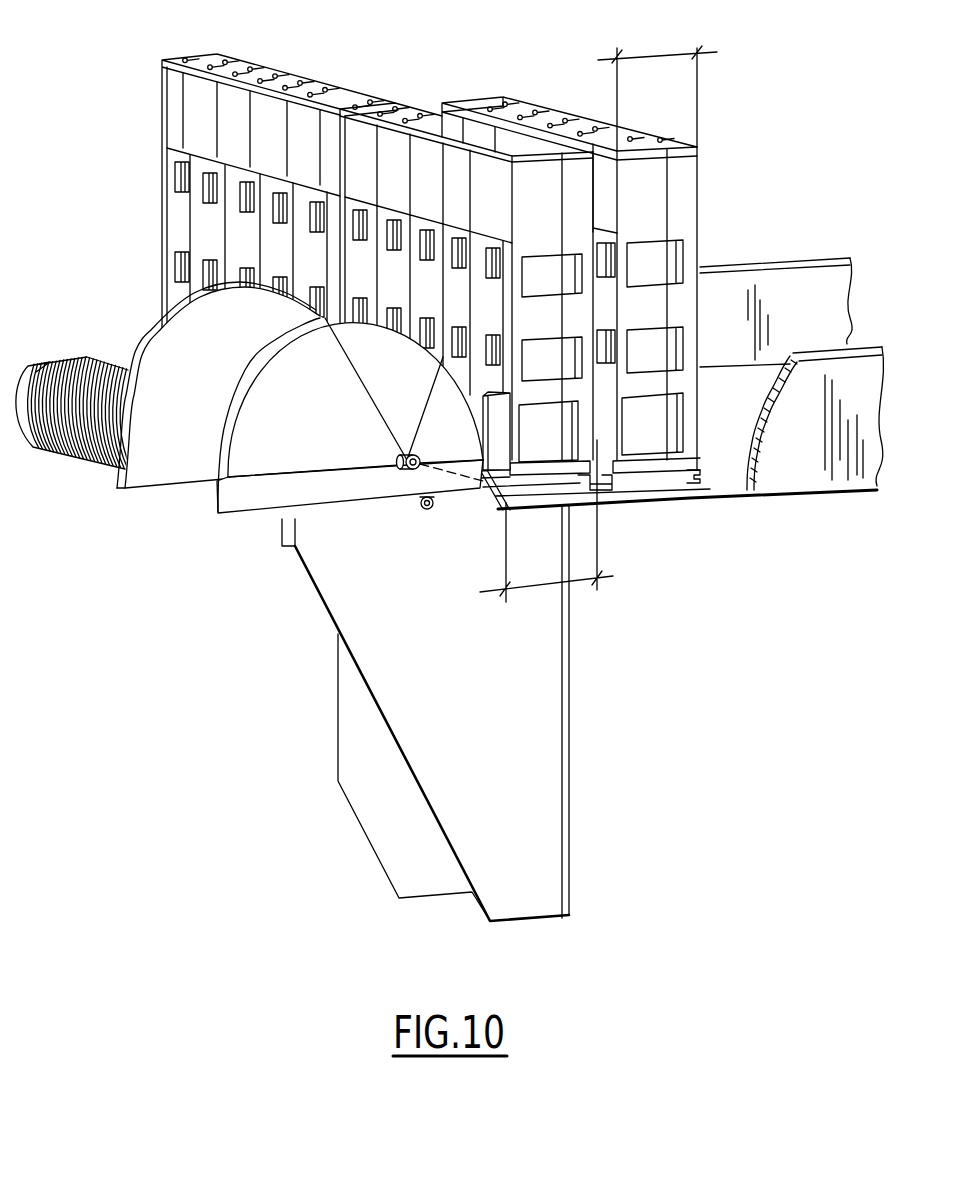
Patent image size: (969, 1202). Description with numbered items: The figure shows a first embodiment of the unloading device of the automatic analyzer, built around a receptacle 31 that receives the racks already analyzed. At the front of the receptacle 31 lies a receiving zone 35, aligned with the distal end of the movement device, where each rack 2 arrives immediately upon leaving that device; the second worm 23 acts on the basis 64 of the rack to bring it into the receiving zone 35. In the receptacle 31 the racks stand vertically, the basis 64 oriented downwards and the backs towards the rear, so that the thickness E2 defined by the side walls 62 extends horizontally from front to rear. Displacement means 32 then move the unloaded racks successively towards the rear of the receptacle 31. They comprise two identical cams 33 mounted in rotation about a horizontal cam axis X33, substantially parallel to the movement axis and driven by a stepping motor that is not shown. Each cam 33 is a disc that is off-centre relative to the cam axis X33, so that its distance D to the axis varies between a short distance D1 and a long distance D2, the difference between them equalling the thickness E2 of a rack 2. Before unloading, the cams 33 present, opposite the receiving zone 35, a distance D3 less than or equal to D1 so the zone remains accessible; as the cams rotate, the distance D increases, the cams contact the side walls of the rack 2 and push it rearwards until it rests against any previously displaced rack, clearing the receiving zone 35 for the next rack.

The rack 2 is at (464, 243).
The side wall 62 is at (411, 117).
The second worm 23 is at (72, 451).
The cam 33 is at (171, 389).
The displacement means 32 is at (267, 487).
The cam axis X33 is at (433, 468).
The receiving zone 35 is at (533, 503).
The basis 64 is at (647, 484).
The receptacle 31 is at (723, 471).
The distance to the axis D is at (365, 389).
The short distance to the axis D1 is at (420, 408).
The long distance to the axis D2 is at (314, 456).
The distance to the axis opposite the receiving zone D3 is at (451, 439).
The thickness E2 is at (598, 307).